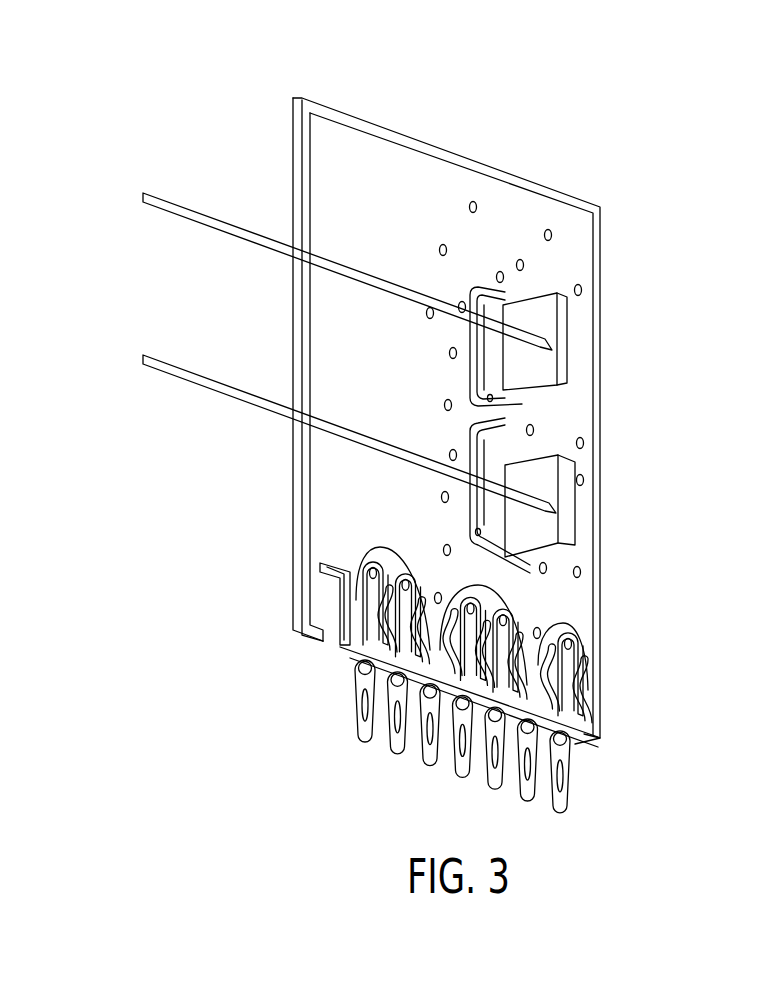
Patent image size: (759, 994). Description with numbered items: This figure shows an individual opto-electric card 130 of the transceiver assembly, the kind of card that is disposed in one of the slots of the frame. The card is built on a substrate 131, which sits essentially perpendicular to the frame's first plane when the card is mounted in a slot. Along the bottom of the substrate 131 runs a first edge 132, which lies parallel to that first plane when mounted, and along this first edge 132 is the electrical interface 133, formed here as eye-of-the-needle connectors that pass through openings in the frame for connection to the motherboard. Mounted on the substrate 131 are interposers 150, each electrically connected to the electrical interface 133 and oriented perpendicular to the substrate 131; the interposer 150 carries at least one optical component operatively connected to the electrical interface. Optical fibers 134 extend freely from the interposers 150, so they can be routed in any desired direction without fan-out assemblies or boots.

The opto-electric card 130 is at (460, 126).
The substrate 131 is at (539, 212).
The first edge 132 is at (600, 745).
The electrical interface 133 is at (568, 808).
The optical fiber 134 is at (208, 378).
The interposer 150 is at (548, 373).